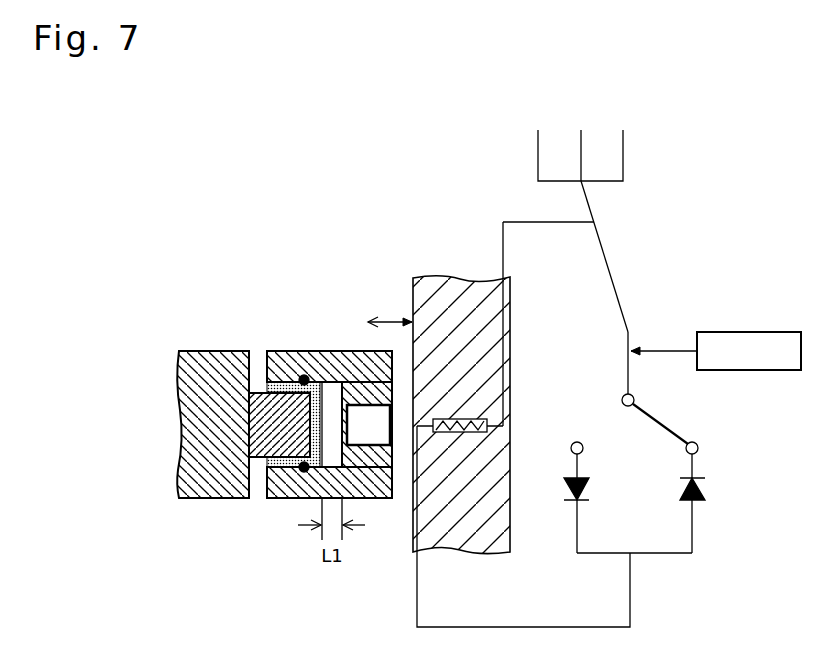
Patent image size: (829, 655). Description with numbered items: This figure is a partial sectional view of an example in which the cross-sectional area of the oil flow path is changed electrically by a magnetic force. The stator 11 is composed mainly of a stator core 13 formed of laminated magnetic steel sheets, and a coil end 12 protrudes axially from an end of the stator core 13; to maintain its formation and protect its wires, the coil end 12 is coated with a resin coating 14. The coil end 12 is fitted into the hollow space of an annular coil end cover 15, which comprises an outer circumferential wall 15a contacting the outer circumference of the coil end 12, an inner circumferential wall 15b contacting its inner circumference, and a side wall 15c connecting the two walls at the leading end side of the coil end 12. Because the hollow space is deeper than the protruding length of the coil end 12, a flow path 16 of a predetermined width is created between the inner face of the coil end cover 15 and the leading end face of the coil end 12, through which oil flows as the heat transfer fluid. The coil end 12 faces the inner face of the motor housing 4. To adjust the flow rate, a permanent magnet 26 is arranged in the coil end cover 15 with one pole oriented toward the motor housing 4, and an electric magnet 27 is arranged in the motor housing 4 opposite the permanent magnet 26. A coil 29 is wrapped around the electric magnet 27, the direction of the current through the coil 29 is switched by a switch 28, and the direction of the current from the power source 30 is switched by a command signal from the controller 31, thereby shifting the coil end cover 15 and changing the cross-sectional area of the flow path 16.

The motor housing 4 is at (463, 294).
The stator 11 is at (184, 346).
The coil end 12 is at (280, 425).
The stator core 13 is at (225, 351).
The resin coating 14 is at (263, 382).
The coil end cover 15 is at (252, 506).
The outer circumferential wall 15a is at (297, 351).
The inner circumferential wall 15b is at (288, 498).
The side wall 15c is at (366, 397).
The flow path 16 is at (332, 393).
The permanent magnet 26 is at (378, 445).
The electric magnet 27 is at (478, 445).
The switch 28 is at (699, 428).
The coil 29 is at (460, 424).
The power source 30 is at (636, 155).
The controller 31 is at (750, 332).